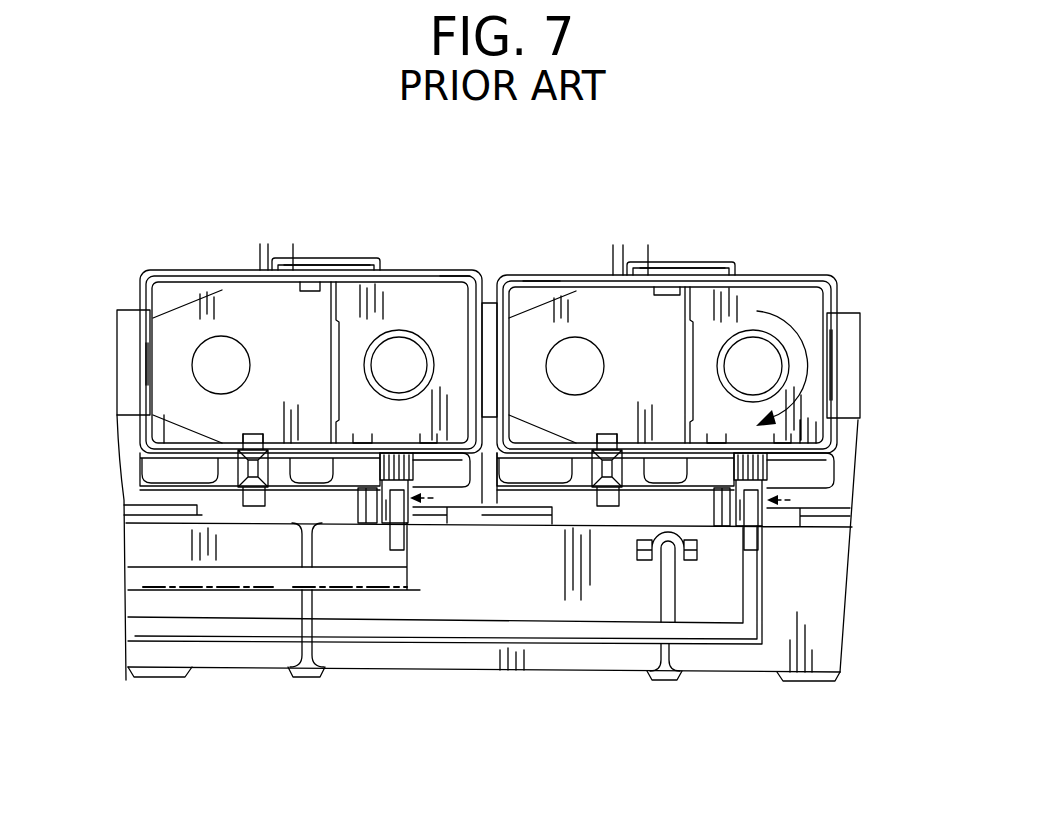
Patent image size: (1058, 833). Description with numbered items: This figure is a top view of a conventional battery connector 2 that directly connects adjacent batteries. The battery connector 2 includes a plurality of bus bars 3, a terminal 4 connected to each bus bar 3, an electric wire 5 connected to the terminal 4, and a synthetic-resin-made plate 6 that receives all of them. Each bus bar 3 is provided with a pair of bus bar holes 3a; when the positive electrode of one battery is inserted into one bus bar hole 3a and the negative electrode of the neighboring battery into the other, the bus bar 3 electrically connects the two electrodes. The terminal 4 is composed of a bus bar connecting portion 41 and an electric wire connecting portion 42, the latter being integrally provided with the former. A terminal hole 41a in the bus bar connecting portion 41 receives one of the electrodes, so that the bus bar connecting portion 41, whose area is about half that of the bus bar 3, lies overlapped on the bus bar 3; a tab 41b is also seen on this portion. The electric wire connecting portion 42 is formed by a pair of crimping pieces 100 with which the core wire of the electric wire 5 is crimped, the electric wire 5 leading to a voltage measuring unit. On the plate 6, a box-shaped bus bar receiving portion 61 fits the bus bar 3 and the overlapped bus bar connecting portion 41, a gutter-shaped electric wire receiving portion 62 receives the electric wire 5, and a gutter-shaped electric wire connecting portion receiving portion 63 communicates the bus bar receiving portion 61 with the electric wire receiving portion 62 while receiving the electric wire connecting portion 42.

The battery connector 2 is at (206, 258).
The plate 6 is at (781, 267).
The bus bar 3 is at (177, 327).
The bus bar hole 3a is at (195, 363).
The terminal hole 41a is at (419, 358).
The bus bar tab 41b is at (331, 283).
The bus bar receiving portion 61 is at (442, 274).
The bus bar connecting portion 41 is at (815, 432).
The electric wire connecting portion 42 is at (790, 498).
The terminal 4 is at (583, 702).
The electric wire connecting portion receiving portion 63 is at (358, 503).
The electric wire 5 is at (375, 632).
The electric wire receiving portion 62 is at (230, 655).
The crimping piece 100 is at (392, 505).